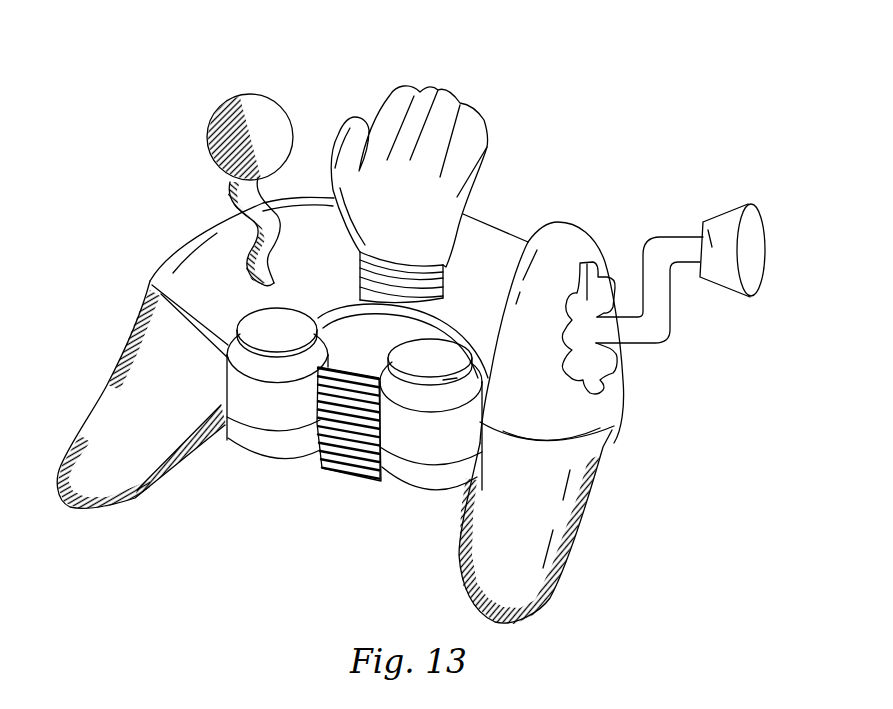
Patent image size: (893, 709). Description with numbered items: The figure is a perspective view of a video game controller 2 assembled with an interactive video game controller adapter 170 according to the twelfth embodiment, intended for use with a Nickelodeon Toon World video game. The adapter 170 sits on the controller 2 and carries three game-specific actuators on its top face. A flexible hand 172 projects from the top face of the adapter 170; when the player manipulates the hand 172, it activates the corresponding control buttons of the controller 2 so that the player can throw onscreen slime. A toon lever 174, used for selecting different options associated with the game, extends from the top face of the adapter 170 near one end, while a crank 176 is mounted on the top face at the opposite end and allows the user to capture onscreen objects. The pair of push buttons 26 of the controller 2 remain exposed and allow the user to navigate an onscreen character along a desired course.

The adapter 170 is at (318, 210).
The flexible hand 172 is at (451, 95).
The toon lever 174 is at (250, 98).
The crank 176 is at (716, 224).
The push buttons 26 is at (428, 370).
The video game controller 2 is at (530, 617).